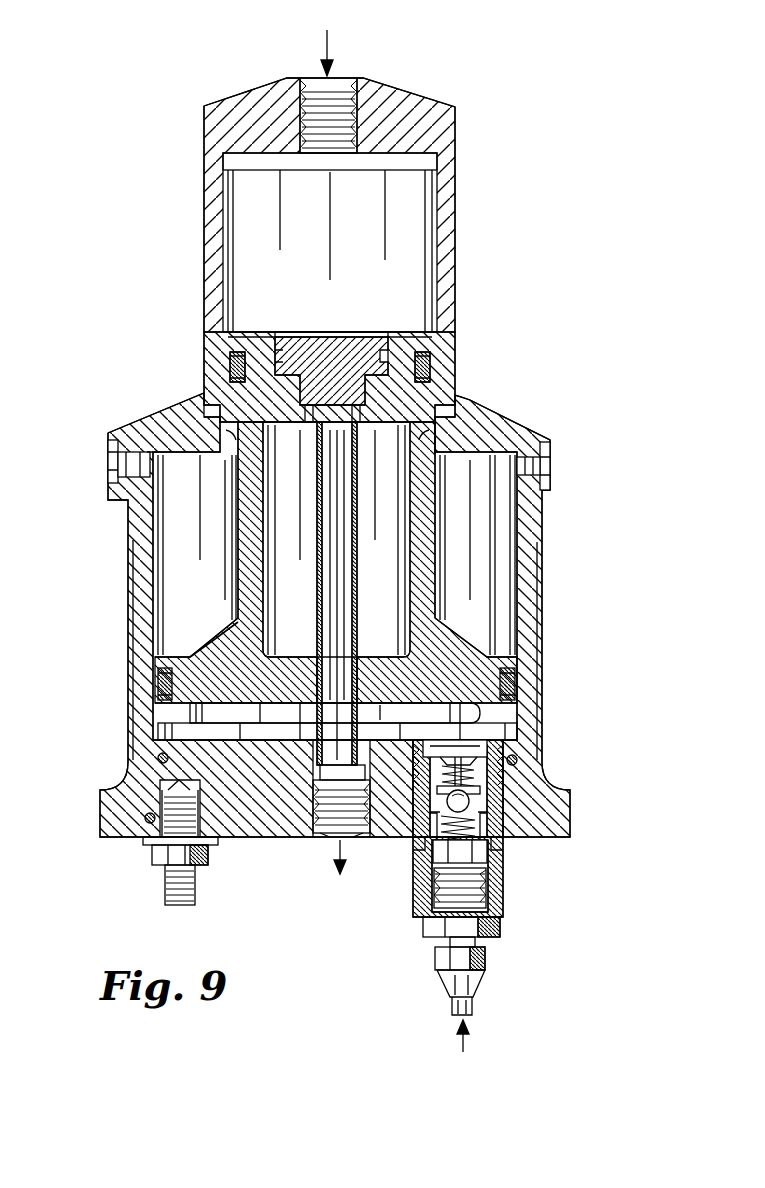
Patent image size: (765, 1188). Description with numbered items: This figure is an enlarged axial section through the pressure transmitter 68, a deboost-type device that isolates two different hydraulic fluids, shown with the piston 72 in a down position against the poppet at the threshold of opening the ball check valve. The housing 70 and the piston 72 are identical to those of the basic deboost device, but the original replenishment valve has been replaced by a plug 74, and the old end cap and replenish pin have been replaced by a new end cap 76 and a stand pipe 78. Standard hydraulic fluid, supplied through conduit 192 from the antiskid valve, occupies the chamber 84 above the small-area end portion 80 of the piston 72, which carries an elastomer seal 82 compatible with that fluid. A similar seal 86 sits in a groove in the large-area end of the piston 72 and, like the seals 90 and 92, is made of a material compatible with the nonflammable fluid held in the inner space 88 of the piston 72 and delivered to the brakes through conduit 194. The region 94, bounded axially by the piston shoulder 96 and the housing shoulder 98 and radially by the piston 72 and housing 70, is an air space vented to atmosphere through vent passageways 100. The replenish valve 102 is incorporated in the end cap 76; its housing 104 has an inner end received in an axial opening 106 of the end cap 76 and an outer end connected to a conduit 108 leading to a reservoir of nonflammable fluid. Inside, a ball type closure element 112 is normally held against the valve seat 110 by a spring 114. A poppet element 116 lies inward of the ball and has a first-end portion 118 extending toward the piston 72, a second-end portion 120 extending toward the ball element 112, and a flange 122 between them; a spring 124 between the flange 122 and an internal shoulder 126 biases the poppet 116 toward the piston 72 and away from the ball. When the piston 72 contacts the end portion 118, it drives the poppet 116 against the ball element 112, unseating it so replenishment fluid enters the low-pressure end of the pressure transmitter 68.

The pressure transmitter 68 is at (556, 420).
The housing 70 is at (527, 505).
The piston 72 is at (240, 577).
The plug 74 is at (342, 352).
The end cap 76 is at (238, 838).
The stand pipe 78 is at (352, 497).
The small-area end portion 80 is at (240, 400).
The seal 82 is at (240, 368).
The chamber 84 is at (420, 213).
The seal 86 is at (512, 690).
The inner space 88 is at (382, 583).
The seal 90 is at (522, 758).
The seal 92 is at (522, 813).
The region 94 is at (175, 515).
The piston shoulder 96 is at (222, 637).
The housing shoulder 98 is at (175, 463).
The vent passageways 100 is at (533, 468).
The replenish valve 102 is at (510, 890).
The housing 104 is at (427, 912).
The axial opening 106 is at (420, 828).
The conduit 108 is at (475, 1003).
The valve seat 110 is at (470, 800).
The ball type closure element 112 is at (455, 835).
The spring 114 is at (415, 897).
The poppet element 116 is at (478, 735).
The first-end portion 118 is at (447, 716).
The second-end portion 120 is at (458, 768).
The flange 122 is at (460, 748).
The spring 124 is at (482, 788).
The internal shoulder 126 is at (440, 853).
The conduit 192 is at (330, 50).
The conduit 194 is at (318, 852).